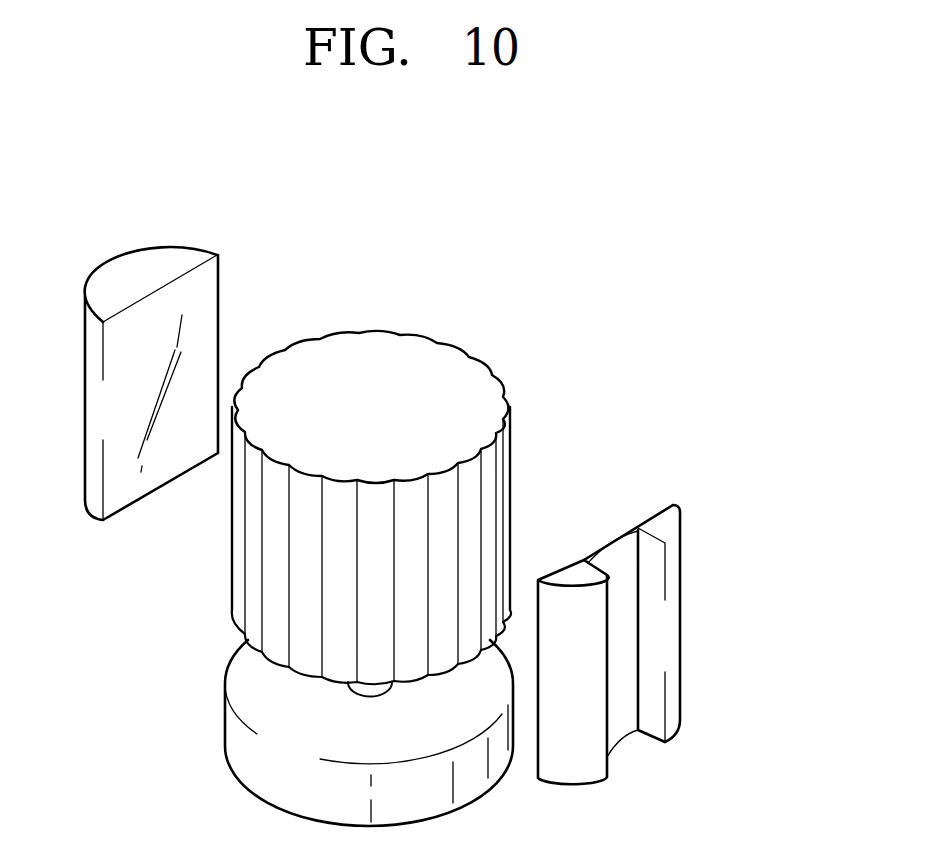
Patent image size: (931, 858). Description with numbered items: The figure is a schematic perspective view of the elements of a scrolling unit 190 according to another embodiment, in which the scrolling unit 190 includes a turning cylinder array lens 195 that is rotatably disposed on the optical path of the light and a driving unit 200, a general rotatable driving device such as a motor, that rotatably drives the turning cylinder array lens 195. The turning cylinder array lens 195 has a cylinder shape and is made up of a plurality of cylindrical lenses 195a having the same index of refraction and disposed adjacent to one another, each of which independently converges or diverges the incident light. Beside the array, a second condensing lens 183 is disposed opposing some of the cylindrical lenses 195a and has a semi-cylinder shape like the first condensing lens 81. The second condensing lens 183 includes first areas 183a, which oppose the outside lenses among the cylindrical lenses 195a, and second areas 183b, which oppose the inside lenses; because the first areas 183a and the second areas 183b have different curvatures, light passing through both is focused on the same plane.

The first condensing lens 81 is at (163, 263).
The scrolling unit 190 is at (506, 352).
The turning cylinder array lens 195 is at (371, 467).
The cylindrical lenses 195a is at (423, 337).
The driving unit 200 is at (232, 730).
The second condensing lens 183 is at (668, 659).
The first areas 183a is at (673, 557).
The second areas 183b is at (628, 623).